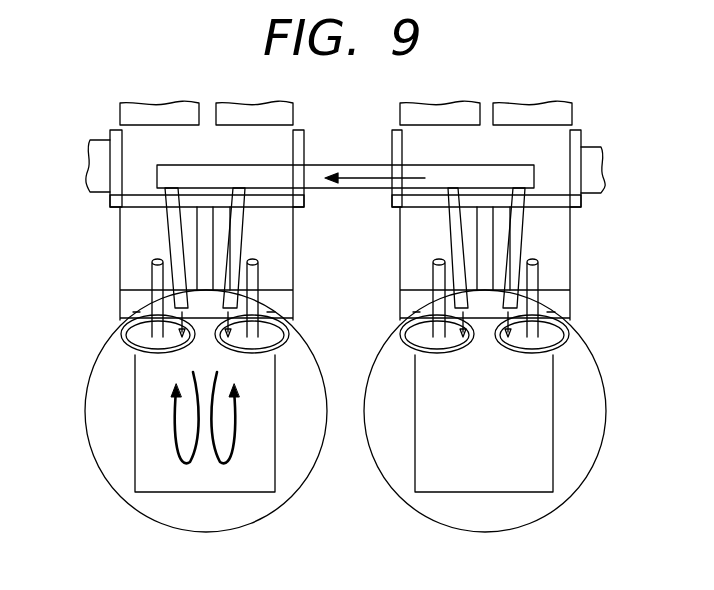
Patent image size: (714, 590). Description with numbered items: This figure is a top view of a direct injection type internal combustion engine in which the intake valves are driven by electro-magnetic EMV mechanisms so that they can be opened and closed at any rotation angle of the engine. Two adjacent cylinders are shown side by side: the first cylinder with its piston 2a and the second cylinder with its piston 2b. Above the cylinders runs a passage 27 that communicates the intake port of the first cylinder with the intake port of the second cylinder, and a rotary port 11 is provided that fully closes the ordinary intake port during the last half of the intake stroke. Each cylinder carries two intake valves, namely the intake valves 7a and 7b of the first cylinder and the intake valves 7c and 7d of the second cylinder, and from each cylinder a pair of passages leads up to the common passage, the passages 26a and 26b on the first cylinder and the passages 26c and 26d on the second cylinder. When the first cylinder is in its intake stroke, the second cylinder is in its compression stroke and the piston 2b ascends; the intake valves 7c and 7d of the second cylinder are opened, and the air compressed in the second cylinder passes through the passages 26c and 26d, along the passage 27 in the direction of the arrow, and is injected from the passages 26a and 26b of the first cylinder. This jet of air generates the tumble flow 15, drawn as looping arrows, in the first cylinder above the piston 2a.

The rotary port 11 is at (305, 150).
The passage 27 is at (348, 165).
The passage 26a is at (167, 228).
The passage 26b is at (243, 226).
The passage 26c is at (452, 244).
The passage 26d is at (523, 226).
The intake valve 7a is at (140, 340).
The intake valve 7b is at (273, 338).
The intake valve 7c is at (422, 340).
The intake valve 7d is at (553, 338).
The piston 2a is at (115, 495).
The piston 2b is at (395, 495).
The tumble flow 15 is at (172, 420).